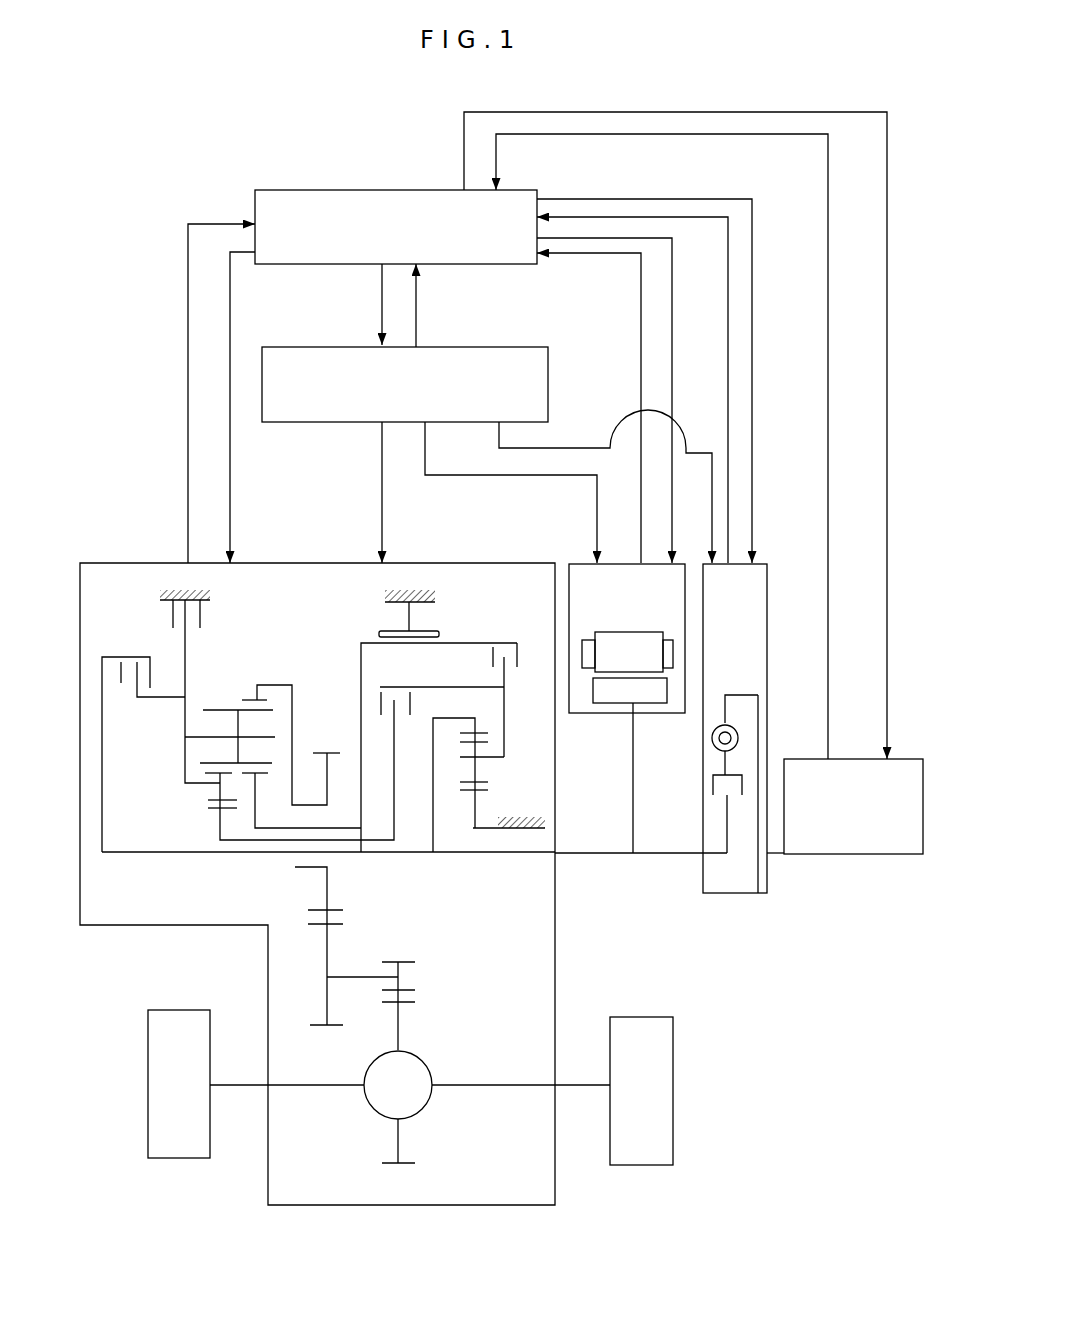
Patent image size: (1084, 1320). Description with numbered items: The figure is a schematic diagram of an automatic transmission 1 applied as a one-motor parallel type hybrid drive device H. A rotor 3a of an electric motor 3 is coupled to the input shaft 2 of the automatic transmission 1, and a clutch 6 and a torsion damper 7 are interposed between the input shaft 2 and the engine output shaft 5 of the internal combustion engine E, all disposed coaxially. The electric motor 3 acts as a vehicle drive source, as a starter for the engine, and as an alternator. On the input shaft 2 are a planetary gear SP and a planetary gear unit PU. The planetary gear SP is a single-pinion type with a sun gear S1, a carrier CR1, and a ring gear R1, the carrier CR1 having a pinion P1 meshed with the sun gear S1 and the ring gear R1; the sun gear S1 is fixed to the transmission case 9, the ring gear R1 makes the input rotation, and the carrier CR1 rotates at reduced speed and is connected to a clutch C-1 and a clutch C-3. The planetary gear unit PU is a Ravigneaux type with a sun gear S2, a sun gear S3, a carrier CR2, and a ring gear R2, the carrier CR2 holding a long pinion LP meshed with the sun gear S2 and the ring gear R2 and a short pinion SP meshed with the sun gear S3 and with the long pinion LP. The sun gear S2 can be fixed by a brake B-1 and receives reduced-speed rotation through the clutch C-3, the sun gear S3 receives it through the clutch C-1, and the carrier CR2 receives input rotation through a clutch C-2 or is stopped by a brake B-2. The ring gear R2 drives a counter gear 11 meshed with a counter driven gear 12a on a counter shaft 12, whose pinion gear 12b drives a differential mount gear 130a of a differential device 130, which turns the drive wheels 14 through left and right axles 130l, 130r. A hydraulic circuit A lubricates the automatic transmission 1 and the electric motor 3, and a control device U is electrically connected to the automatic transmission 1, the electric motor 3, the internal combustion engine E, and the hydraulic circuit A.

The control device U is at (372, 188).
The hydraulic circuit A is at (522, 345).
The hybrid drive device H is at (492, 543).
The automatic transmission 1 is at (310, 625).
The transmission case 9 is at (215, 598).
The brake B-2 is at (185, 598).
The brake B-1 is at (409, 603).
The clutch C-1 is at (439, 747).
The clutch C-2 is at (143, 742).
The clutch C-3 is at (502, 689).
The planetary gear unit PU is at (267, 675).
The ring gear R2 is at (255, 700).
The long pinion LP is at (223, 709).
The carrier CR2 is at (203, 738).
The counter gear 11 is at (320, 753).
The planetary gear / short pinion SP is at (212, 790).
The sun gear S2 is at (257, 777).
The sun gear S3 is at (212, 808).
The ring gear R1 is at (478, 733).
The carrier CR1 is at (507, 753).
The pinion P1 is at (480, 782).
The sun gear S1 is at (482, 792).
The input shaft 2 is at (538, 857).
The electric motor 3 is at (615, 625).
The rotor 3a is at (668, 693).
The torsion damper 7 is at (723, 725).
The internal combustion engine E is at (843, 717).
The engine output shaft 5 is at (760, 893).
The clutch 6 is at (730, 813).
The counter shaft 12 is at (350, 977).
The counter driven gear 12a is at (318, 1028).
The pinion gear 12b is at (408, 960).
The differential device 130 is at (428, 1057).
The differential mount gear 130a is at (410, 997).
The left axle 130l is at (322, 1088).
The right axle 130r is at (478, 1088).
The drive wheel 14 is at (185, 1010).